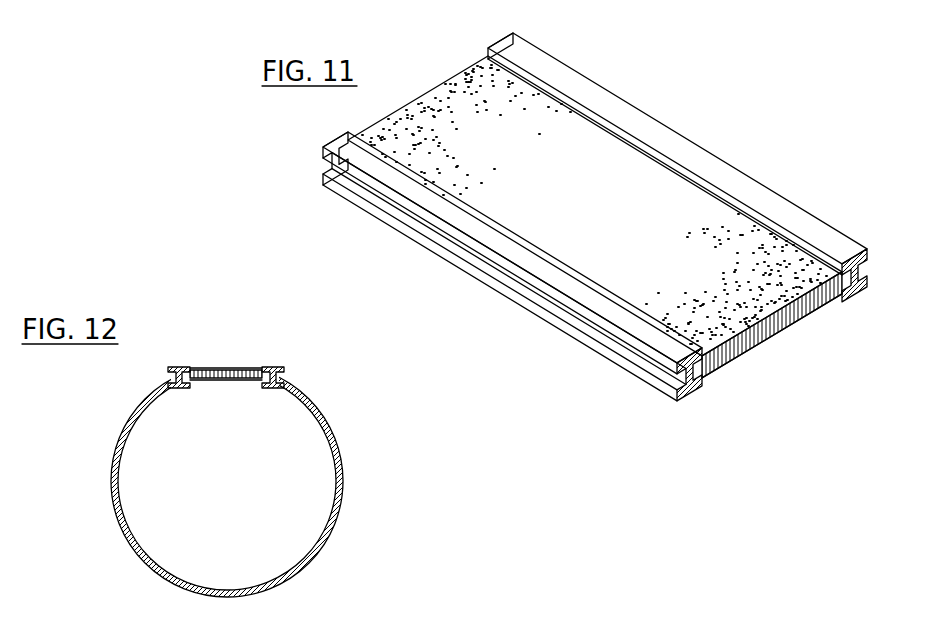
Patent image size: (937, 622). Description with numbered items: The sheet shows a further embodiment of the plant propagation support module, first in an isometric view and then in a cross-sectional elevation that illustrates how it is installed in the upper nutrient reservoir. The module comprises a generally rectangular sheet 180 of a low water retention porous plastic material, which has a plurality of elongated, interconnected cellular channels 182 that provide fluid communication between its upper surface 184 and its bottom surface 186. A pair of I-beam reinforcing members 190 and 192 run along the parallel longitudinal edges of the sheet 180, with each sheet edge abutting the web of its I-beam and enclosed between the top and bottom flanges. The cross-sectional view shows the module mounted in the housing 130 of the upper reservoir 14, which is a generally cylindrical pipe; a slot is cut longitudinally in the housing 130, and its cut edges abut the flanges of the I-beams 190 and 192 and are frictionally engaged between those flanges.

In FIG. 12, the upper reservoir 14 is at (349, 474).
In FIG. 12, the cylindrical pipe or housing 130 is at (246, 481).
In FIG. 11, the rectangular sheet 180 is at (595, 218).
In FIG. 12, the rectangular sheet 180 is at (219, 374).
In FIG. 11, the cellular channels 182 is at (770, 328).
In FIG. 12, the cellular channels 182 is at (237, 379).
In FIG. 11, the upper surface 184 is at (456, 86).
In FIG. 12, the upper surface 184 is at (215, 368).
In FIG. 11, the bottom surface 186 is at (731, 360).
In FIG. 12, the bottom surface 186 is at (215, 384).
In FIG. 11, the I-beam reinforcing member 190 is at (658, 389).
In FIG. 12, the I-beam reinforcing member 190 is at (168, 370).
In FIG. 11, the I-beam reinforcing member 192 is at (812, 223).
In FIG. 12, the I-beam reinforcing member 192 is at (284, 368).